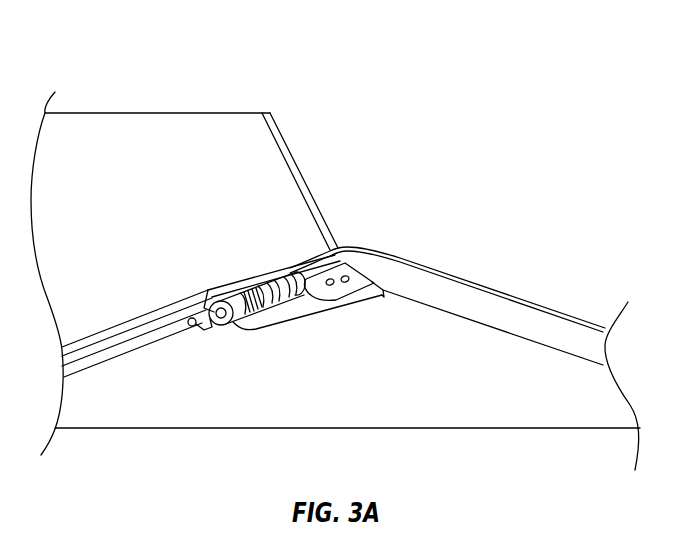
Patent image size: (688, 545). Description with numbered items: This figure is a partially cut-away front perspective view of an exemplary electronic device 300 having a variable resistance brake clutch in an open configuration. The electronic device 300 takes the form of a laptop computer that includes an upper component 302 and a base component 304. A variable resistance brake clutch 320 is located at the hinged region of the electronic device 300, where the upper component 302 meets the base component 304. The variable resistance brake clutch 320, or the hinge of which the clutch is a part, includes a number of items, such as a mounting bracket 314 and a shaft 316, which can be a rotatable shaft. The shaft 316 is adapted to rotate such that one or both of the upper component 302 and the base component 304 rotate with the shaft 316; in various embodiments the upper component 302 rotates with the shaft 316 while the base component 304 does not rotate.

The electronic device 300 is at (543, 63).
The upper component 302 is at (102, 154).
The base component 304 is at (541, 409).
The variable resistance brake clutch 320 is at (233, 262).
The mounting bracket 314 is at (357, 292).
The shaft 316 is at (208, 328).